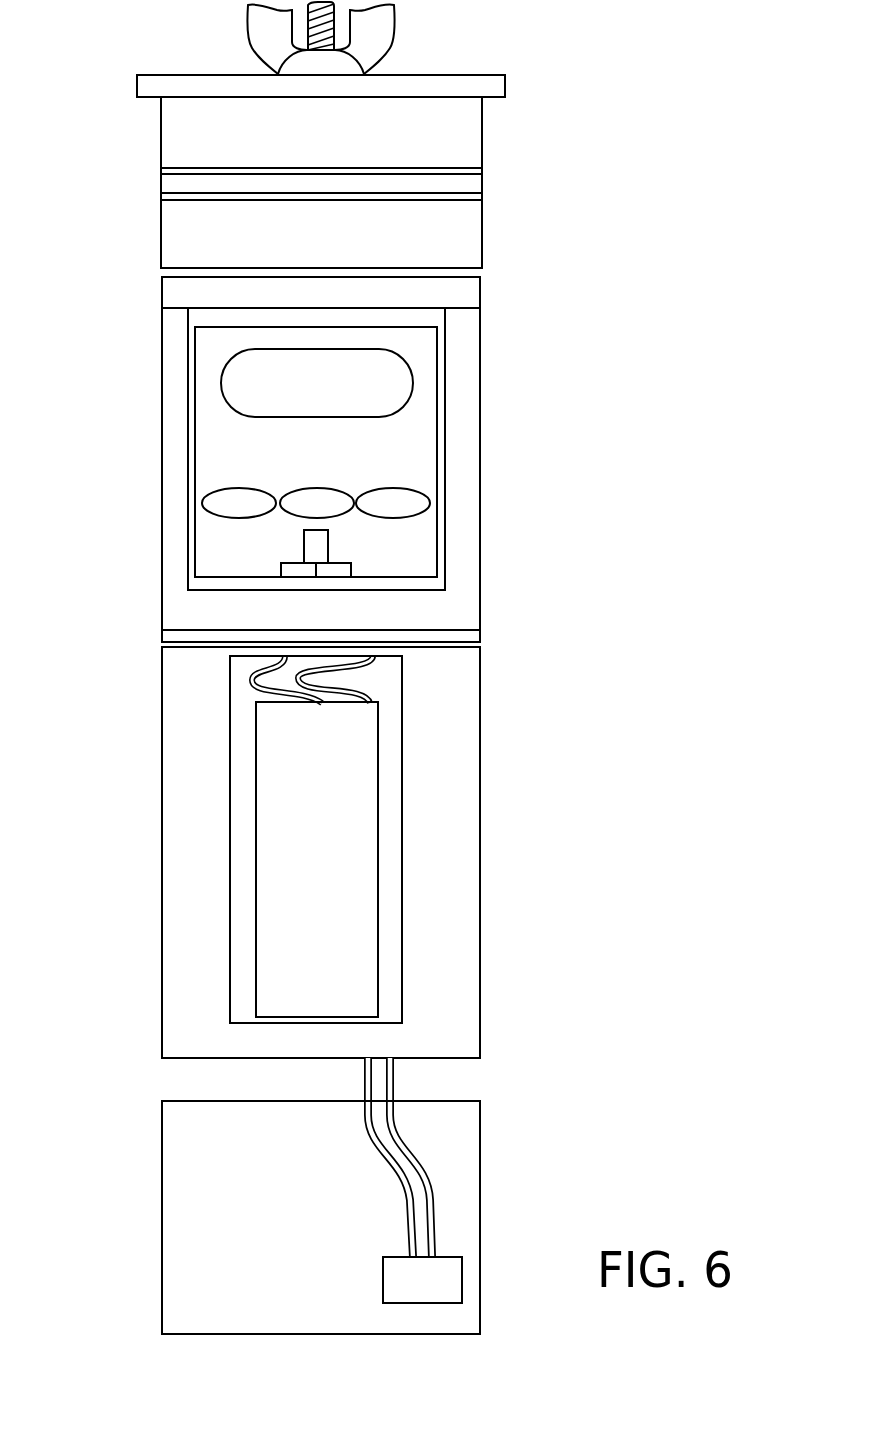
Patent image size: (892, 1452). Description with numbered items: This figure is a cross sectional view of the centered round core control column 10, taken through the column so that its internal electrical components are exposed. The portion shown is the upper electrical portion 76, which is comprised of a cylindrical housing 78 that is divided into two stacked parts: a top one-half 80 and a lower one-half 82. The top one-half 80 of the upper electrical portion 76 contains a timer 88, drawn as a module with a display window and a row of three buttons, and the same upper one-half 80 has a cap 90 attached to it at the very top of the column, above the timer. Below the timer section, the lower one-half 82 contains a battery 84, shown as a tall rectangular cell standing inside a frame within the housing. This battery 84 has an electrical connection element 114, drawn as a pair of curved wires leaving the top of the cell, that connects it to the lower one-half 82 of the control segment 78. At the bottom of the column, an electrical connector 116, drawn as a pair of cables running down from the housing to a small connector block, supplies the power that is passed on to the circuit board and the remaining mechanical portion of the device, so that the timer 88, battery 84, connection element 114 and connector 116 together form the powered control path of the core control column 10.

The core control column 10 is at (439, 668).
The upper electrical portion 76 is at (538, 393).
The cylindrical housing 78 is at (502, 503).
The top one-half 80 is at (492, 605).
The lower one-half 82 is at (352, 852).
The battery 84 is at (365, 735).
The timer 88 is at (423, 335).
The cap 90 is at (482, 137).
The electrical connection element 114 is at (260, 697).
The electrical connector 116 is at (388, 1158).